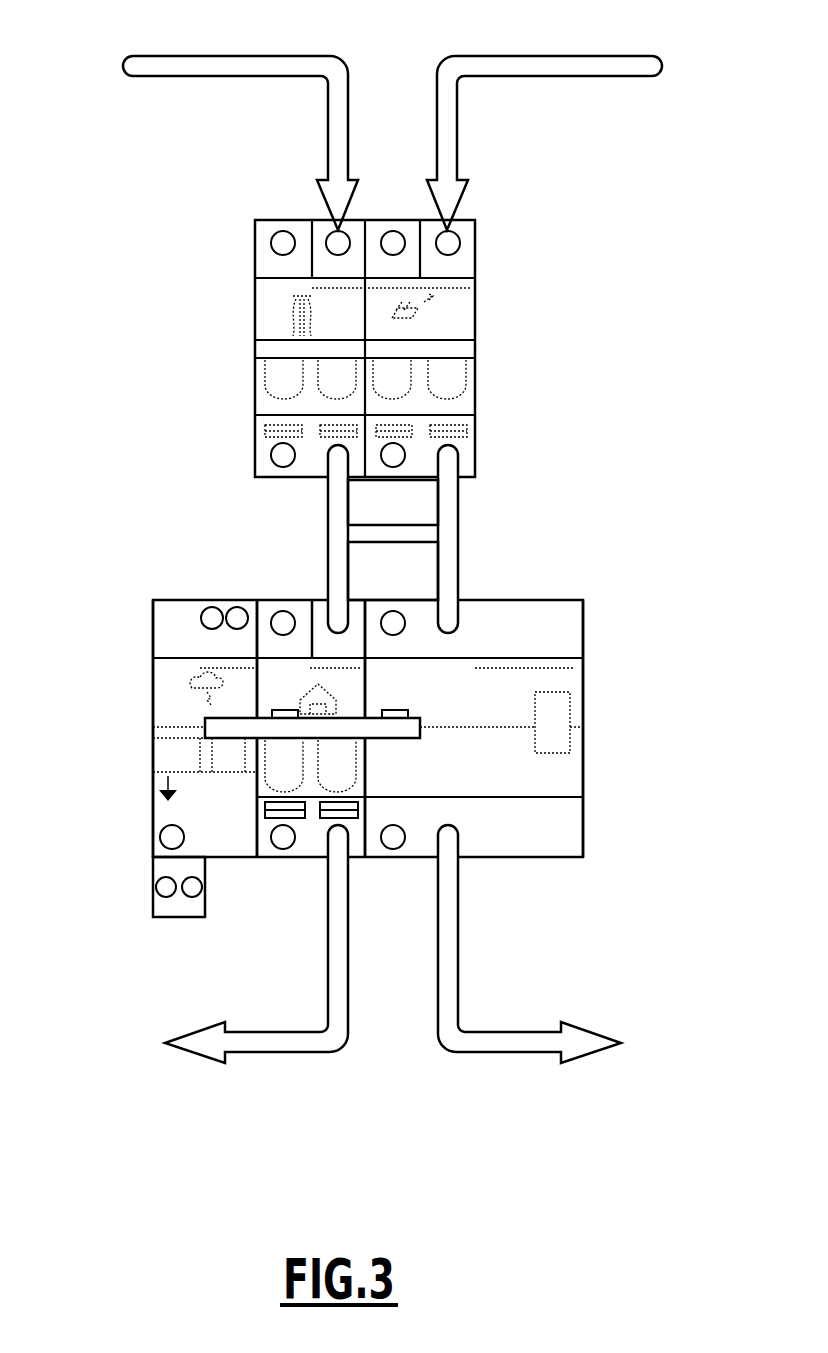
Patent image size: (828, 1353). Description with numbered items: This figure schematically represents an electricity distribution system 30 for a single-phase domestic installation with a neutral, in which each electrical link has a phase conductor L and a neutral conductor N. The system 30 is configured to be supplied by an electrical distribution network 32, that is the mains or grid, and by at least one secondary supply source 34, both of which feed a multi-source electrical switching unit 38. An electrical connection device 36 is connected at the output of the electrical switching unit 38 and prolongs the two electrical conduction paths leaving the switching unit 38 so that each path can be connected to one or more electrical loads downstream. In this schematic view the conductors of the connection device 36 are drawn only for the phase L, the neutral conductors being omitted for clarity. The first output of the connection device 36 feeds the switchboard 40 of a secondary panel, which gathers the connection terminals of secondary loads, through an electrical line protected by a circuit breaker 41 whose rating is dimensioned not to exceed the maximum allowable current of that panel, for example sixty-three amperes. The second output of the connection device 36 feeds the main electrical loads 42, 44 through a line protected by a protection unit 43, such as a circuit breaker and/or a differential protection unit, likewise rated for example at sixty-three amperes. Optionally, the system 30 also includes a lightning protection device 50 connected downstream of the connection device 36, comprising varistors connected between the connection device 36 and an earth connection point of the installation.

The electricity distribution system 30 is at (369, 553).
The electrical distribution network 32 is at (238, 66).
The secondary supply source 34 is at (520, 66).
The electrical connection device 36 is at (480, 540).
The multi-source electrical switching unit 38 is at (247, 259).
The switchboard 40 is at (272, 1054).
The circuit breaker 41 is at (262, 590).
The main electrical load 42 is at (529, 968).
The protection unit 43 is at (596, 820).
The main electrical load 44 is at (510, 1054).
The lightning protection device 50 is at (142, 795).